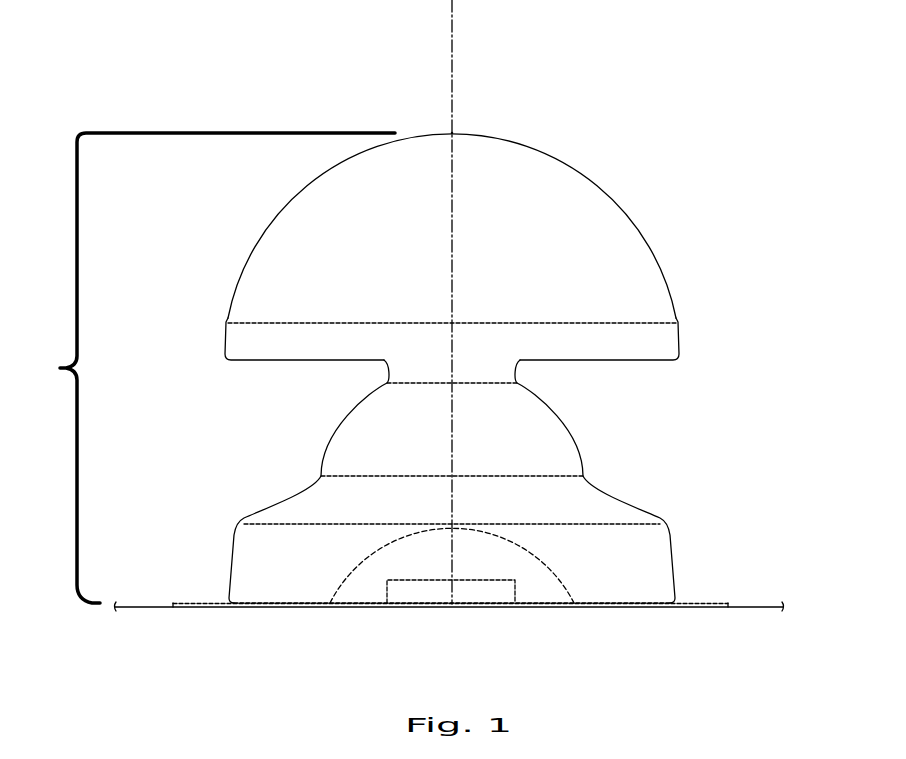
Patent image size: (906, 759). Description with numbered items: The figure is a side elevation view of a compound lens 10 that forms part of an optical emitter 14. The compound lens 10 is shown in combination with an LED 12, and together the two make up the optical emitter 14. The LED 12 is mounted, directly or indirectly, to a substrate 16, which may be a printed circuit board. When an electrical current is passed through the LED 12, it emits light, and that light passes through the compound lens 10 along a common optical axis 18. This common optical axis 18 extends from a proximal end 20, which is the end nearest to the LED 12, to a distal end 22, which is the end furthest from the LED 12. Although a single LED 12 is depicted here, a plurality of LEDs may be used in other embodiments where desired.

The compound lens 10 is at (212, 368).
The LED 12 is at (427, 580).
The optical emitter 14 is at (650, 193).
The substrate 16 is at (697, 603).
The common optical axis 18 is at (452, 50).
The proximal end 20 is at (452, 527).
The distal end 22 is at (452, 133).